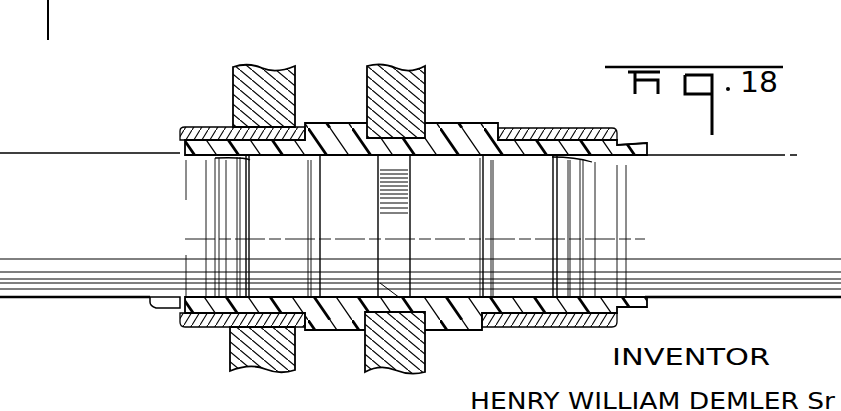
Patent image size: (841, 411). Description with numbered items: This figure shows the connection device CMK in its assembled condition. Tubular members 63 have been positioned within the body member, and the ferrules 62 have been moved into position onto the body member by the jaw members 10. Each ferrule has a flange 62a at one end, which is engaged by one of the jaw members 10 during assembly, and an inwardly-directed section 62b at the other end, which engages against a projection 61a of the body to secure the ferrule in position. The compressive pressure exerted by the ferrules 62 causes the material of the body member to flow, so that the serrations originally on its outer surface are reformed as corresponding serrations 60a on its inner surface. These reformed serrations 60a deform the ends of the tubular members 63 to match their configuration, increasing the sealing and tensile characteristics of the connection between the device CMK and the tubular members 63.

The jaw members 10 is at (374, 86).
The reformed serrations 60a is at (245, 160).
The projections 61a is at (166, 145).
The ferrules 62 is at (221, 327).
The flanges 62a is at (300, 124).
The inwardly-directed sections 62b is at (622, 139).
The tubular members 63 is at (72, 170).
The connection device CMK is at (196, 78).